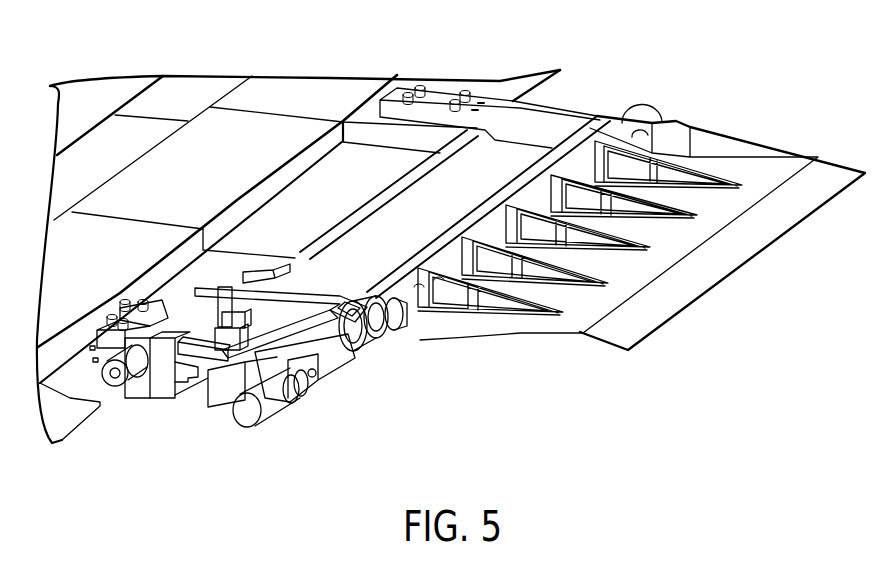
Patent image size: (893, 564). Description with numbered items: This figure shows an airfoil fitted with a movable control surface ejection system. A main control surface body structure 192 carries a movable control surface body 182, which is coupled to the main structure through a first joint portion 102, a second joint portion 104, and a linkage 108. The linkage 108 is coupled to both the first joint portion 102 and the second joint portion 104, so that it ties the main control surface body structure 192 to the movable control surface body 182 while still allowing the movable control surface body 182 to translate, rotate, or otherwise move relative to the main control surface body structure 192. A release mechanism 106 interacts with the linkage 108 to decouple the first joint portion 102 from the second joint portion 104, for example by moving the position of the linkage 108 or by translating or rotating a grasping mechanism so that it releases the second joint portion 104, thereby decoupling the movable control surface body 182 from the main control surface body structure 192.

The main control surface body structure 192 is at (351, 83).
The movable control surface body 182 is at (647, 328).
The first joint portion 102 is at (400, 325).
The second joint portion 104 is at (370, 350).
The release mechanism 106 is at (337, 373).
The linkage 108 is at (247, 425).